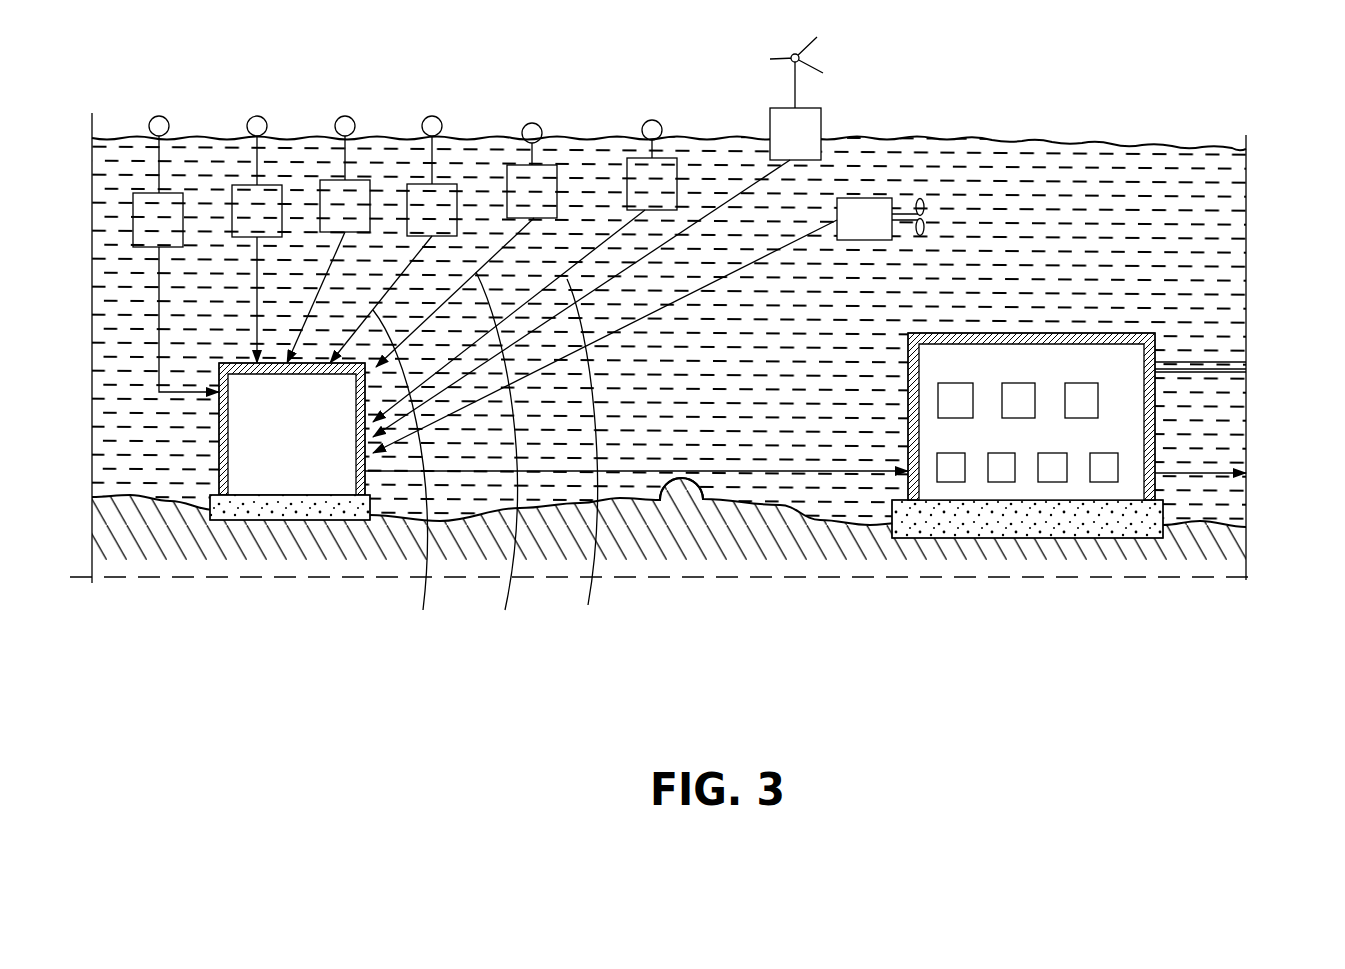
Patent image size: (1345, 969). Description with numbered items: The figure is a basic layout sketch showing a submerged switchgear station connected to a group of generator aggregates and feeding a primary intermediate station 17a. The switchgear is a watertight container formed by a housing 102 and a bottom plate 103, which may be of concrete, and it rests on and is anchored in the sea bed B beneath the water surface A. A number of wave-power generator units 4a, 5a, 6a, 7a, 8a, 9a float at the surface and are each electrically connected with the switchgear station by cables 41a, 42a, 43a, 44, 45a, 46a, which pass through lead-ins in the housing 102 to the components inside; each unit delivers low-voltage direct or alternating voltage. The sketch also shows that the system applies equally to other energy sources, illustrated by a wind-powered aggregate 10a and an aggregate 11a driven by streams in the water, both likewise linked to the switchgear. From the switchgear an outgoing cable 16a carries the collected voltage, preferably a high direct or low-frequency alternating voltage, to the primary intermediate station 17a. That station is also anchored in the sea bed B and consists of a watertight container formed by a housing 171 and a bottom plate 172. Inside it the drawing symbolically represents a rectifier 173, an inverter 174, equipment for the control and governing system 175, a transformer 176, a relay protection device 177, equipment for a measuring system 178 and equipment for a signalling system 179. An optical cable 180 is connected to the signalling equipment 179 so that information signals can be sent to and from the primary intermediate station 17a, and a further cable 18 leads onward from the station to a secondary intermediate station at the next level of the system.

The generator unit 4a is at (172, 212).
The generator unit 5a is at (267, 198).
The generator unit 6a is at (353, 197).
The generator unit 7a is at (437, 203).
The generator unit 8a is at (537, 193).
The generator unit 9a is at (655, 190).
The wind-powered aggregate 10a is at (810, 127).
The water-stream-powered aggregate 11a is at (876, 213).
The cable 41a is at (157, 360).
The cable 42a is at (253, 267).
The cable 43a is at (318, 293).
The cable 44 is at (403, 478).
The cable 45a is at (501, 458).
The cable 46a is at (585, 458).
The housing 102 is at (218, 448).
The bottom plate 103 is at (283, 522).
The outgoing cable 16a is at (750, 471).
The primary intermediate station 17a is at (1089, 435).
The cable 18 is at (1194, 476).
The housing 171 is at (1157, 425).
The bottom plate 172 is at (903, 523).
The rectifier 173 is at (953, 395).
The inverter 174 is at (1015, 395).
The equipment for control and governing system 175 is at (1080, 395).
The transformer 176 is at (947, 467).
The relay protection device 177 is at (1001, 467).
The equipment for a measuring system 178 is at (1053, 467).
The equipment for a signalling system 179 is at (1104, 467).
The optical cable 180 is at (1187, 360).
The water surface A is at (1133, 145).
The sea bed B is at (660, 500).